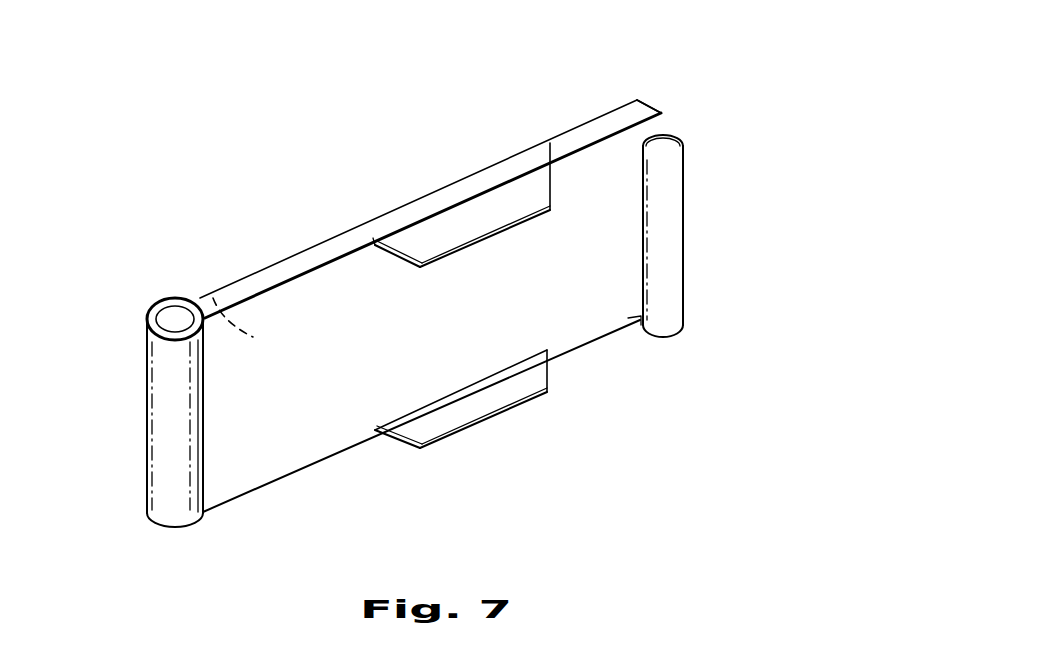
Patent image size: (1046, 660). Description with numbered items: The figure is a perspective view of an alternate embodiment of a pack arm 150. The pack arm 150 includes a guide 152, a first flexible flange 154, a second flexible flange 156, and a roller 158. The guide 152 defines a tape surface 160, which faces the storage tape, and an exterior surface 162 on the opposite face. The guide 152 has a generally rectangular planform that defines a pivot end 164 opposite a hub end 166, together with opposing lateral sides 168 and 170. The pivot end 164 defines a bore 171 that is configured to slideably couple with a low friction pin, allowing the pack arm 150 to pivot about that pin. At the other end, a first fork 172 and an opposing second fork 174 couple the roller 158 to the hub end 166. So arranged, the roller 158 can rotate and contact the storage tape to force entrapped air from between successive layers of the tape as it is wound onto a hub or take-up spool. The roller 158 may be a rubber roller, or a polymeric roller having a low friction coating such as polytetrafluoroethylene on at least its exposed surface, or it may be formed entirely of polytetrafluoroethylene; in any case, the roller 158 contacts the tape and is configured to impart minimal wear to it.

The pack arm 150 is at (768, 190).
The guide 152 is at (232, 516).
The first flexible flange 154 is at (465, 220).
The second flexible flange 156 is at (465, 407).
The roller 158 is at (672, 232).
The tape surface 160 is at (290, 458).
The exterior surface 162 is at (213, 298).
The pivot end 164 is at (160, 413).
The hub end 166 is at (642, 104).
The lateral side 168 is at (297, 267).
The lateral side 170 is at (345, 452).
The bore 171 is at (170, 315).
The first fork 172 is at (663, 134).
The second fork 174 is at (633, 322).